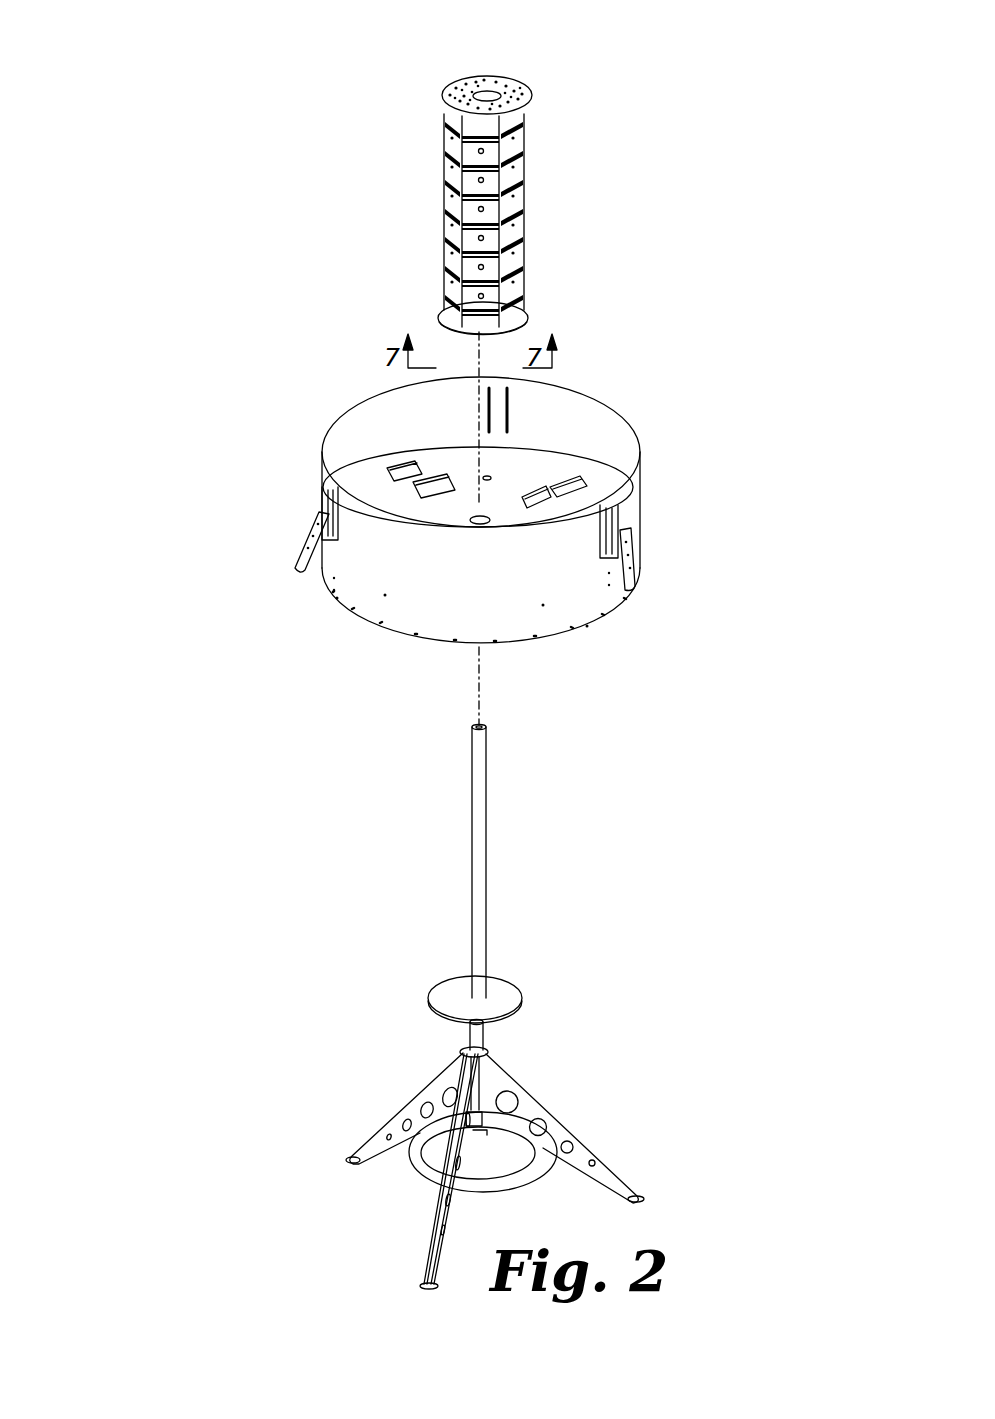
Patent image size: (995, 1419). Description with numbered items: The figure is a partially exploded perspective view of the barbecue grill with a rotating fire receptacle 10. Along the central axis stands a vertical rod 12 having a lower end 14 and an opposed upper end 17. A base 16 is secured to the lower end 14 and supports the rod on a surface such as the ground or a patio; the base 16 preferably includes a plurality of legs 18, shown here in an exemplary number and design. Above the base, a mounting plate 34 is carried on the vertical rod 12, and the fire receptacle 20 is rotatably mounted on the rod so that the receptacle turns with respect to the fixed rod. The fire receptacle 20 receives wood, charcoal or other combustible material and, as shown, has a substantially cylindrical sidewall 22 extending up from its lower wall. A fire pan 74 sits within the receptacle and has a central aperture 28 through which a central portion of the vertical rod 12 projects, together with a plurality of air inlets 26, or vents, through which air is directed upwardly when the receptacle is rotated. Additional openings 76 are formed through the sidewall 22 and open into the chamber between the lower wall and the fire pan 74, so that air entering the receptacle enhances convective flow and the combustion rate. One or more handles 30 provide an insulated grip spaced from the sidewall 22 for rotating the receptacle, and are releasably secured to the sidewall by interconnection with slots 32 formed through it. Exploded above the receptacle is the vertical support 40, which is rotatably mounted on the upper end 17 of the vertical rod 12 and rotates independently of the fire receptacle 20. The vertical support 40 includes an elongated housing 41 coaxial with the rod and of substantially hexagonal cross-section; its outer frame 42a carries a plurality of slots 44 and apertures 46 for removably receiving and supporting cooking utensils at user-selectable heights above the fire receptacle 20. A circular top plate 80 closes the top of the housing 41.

The barbecue grill with a rotating fire receptacle 10 is at (162, 90).
The vertical rod 12 is at (471, 864).
The lower end 14 is at (486, 1040).
The base 16 is at (281, 1003).
The upper end 17 is at (471, 752).
The legs 18 is at (409, 1097).
The fire receptacle 20 is at (296, 383).
The sidewall 22 is at (462, 580).
The air inlets 26 is at (433, 480).
The central aperture 28 is at (498, 507).
The handles 30 is at (316, 518).
The slots 32 is at (540, 403).
The mounting plate 34 is at (430, 995).
The vertical support 40 is at (563, 156).
The elongated housing 41 is at (446, 130).
The outer frame 42a is at (526, 292).
The slots 44 is at (524, 168).
The apertures 46 is at (538, 140).
The fire pan 74 is at (540, 470).
The openings 76 is at (385, 597).
The circular top plate 80 is at (525, 88).